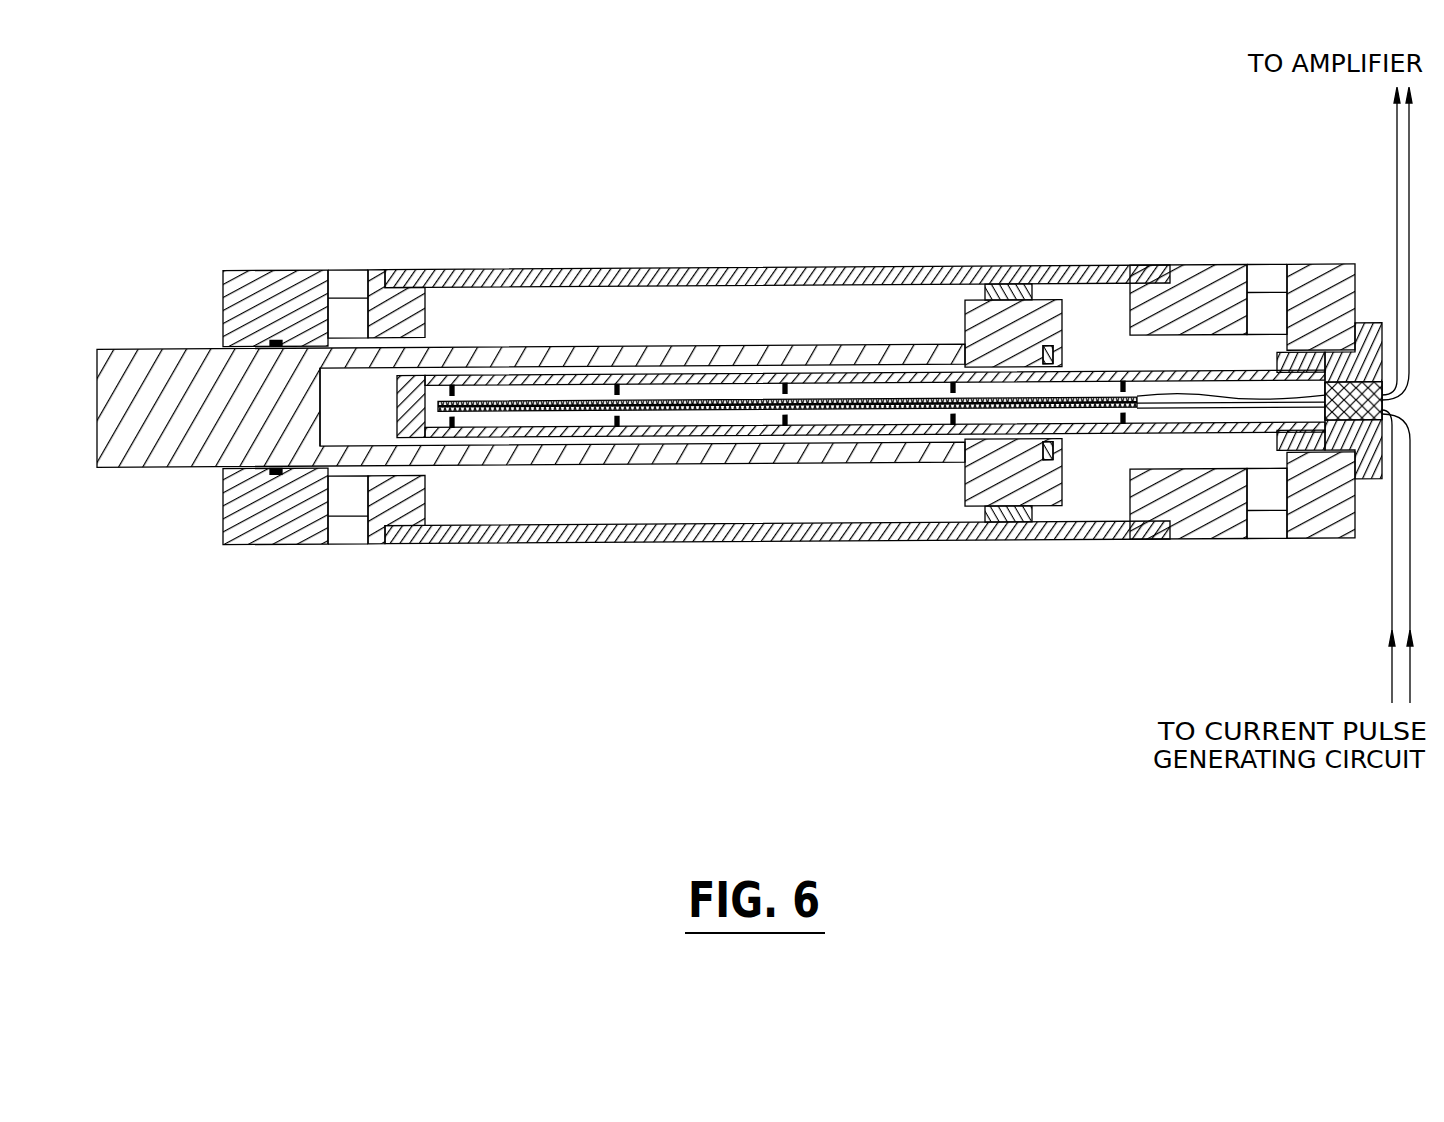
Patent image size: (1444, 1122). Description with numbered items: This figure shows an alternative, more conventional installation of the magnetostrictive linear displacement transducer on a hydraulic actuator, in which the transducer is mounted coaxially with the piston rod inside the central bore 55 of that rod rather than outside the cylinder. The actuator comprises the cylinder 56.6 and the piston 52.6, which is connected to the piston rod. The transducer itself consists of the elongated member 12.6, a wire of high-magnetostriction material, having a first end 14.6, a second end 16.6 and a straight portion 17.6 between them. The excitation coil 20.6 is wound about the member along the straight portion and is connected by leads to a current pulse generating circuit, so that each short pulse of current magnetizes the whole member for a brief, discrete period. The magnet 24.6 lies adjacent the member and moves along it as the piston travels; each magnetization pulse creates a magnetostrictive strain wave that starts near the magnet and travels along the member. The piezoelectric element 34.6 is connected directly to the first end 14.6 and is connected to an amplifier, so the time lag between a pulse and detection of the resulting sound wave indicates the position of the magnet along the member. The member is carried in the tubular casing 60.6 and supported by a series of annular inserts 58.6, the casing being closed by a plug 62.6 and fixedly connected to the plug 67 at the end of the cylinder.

The elongated member 12.6 is at (963, 393).
The first end 14.6 is at (1122, 385).
The second end 16.6 is at (437, 397).
The straight portion 17.6 is at (793, 378).
The excitation coil 20.6 is at (608, 383).
The magnet 24.6 is at (1048, 345).
The piezoelectric element 34.6 is at (1137, 393).
The piston 52.6 is at (960, 548).
The central bore 55 is at (357, 415).
The cylinder 56.6 is at (920, 548).
The annular inserts 58.6 is at (623, 420).
The casing 60.6 is at (1240, 433).
The plug 62.6 is at (441, 412).
The plug 67 is at (1364, 323).